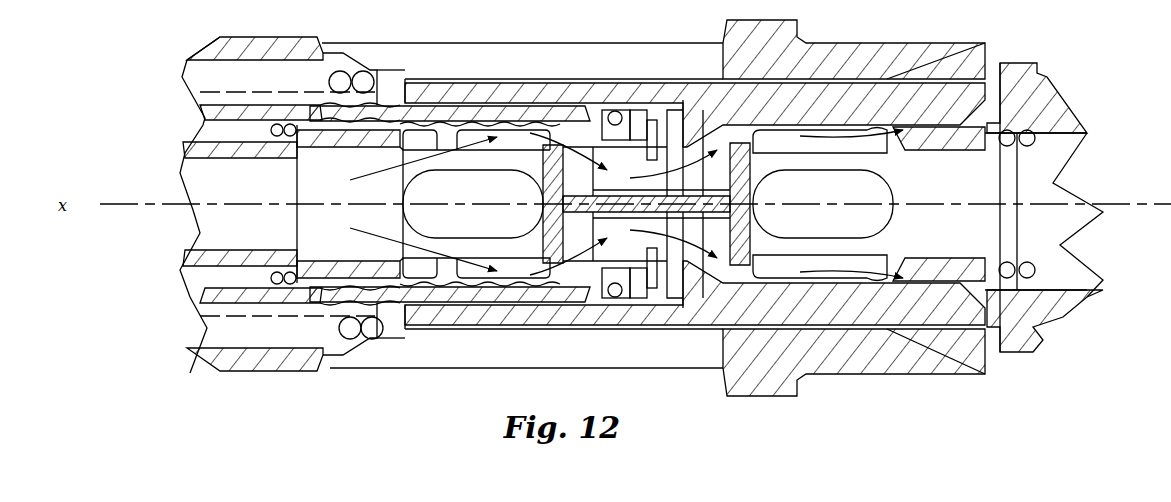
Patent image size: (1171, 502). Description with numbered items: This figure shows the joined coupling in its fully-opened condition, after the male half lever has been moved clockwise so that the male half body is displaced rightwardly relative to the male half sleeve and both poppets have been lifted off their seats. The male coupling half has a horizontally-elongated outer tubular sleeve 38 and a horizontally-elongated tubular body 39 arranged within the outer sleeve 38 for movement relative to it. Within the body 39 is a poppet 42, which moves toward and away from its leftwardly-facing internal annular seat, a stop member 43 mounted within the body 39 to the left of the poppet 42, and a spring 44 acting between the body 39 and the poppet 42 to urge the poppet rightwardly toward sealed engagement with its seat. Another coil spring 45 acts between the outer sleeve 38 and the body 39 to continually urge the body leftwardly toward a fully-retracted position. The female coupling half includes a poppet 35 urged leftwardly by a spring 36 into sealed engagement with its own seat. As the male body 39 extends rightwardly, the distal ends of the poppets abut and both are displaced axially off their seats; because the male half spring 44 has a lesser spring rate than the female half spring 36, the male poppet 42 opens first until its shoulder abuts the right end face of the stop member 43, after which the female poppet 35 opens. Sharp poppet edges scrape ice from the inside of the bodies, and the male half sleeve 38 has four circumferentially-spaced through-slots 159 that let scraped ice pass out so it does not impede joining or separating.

The poppet 35 is at (1044, 333).
The spring 36 is at (1021, 207).
The outer tubular sleeve 38 is at (803, 15).
The tubular body 39 is at (185, 300).
The poppet 42 is at (595, 258).
The stop member 43 is at (185, 153).
The spring 44 is at (182, 77).
The coil spring 45 is at (203, 328).
The through-slots 159 is at (482, 53).